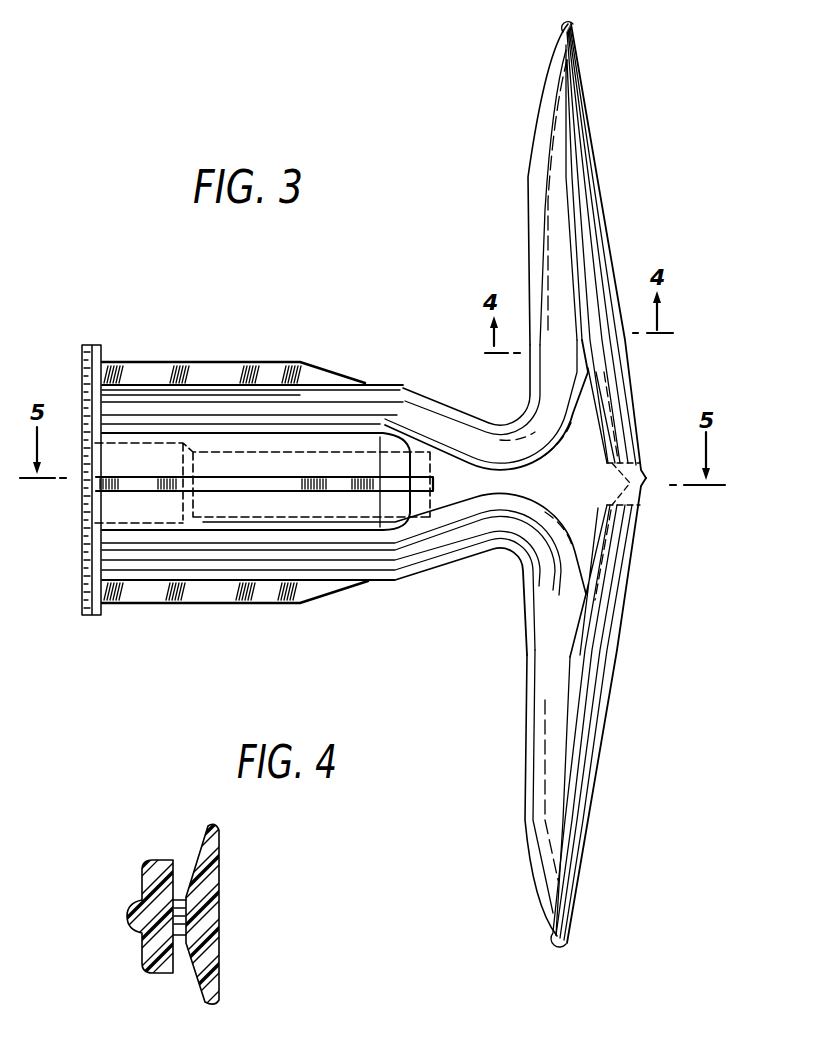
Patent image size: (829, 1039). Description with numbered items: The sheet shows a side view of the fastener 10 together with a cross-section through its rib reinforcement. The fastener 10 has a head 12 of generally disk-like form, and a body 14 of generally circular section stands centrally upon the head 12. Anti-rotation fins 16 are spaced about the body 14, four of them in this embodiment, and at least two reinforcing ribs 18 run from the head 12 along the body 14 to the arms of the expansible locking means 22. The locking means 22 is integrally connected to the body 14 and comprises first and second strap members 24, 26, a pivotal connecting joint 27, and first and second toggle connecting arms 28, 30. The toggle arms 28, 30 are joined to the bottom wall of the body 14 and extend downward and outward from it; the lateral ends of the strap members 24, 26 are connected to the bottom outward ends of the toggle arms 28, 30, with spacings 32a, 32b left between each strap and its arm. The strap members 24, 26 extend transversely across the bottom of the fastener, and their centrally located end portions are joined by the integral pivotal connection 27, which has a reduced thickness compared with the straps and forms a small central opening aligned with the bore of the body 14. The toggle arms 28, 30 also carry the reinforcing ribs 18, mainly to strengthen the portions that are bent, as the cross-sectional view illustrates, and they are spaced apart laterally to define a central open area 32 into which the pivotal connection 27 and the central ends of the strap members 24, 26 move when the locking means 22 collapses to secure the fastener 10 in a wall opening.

In FIG. 3, the fastener 10 is at (257, 496).
In FIG. 3, the head 12 is at (88, 619).
In FIG. 3, the body 14 is at (267, 415).
In FIG. 3, the anti-rotation fins 16 is at (204, 362).
In FIG. 3, the reinforcing ribs 18 is at (392, 394).
In FIG. 4, the reinforcing ribs 18 is at (144, 898).
In FIG. 3, the expansible locking means 22 is at (586, 484).
In FIG. 3, the first strap member 24 is at (555, 250).
In FIG. 4, the first strap member 24 is at (222, 900).
In FIG. 3, the second strap member 26 is at (567, 712).
In FIG. 3, the pivotal connecting joint 27 is at (648, 484).
In FIG. 3, the first toggle connecting arm 28 is at (540, 98).
In FIG. 4, the first toggle connecting arm 28 is at (168, 860).
In FIG. 3, the second toggle connecting arm 30 is at (527, 838).
In FIG. 3, the central open area 32 is at (620, 645).
In FIG. 3, the spacing 32a is at (590, 372).
In FIG. 3, the spacing 32b is at (578, 624).